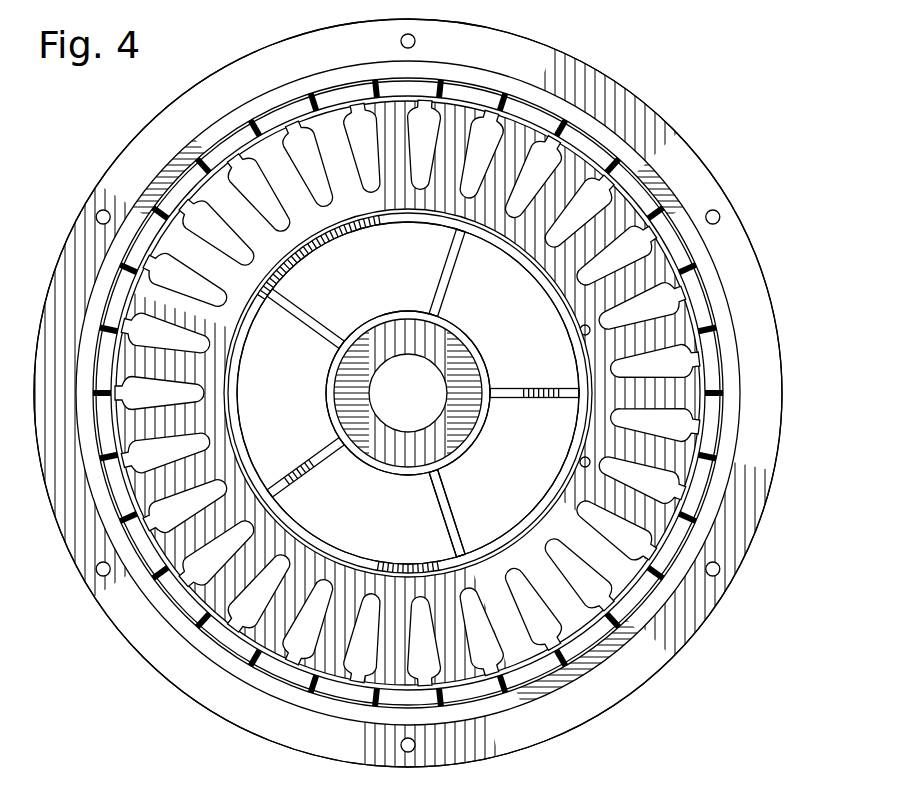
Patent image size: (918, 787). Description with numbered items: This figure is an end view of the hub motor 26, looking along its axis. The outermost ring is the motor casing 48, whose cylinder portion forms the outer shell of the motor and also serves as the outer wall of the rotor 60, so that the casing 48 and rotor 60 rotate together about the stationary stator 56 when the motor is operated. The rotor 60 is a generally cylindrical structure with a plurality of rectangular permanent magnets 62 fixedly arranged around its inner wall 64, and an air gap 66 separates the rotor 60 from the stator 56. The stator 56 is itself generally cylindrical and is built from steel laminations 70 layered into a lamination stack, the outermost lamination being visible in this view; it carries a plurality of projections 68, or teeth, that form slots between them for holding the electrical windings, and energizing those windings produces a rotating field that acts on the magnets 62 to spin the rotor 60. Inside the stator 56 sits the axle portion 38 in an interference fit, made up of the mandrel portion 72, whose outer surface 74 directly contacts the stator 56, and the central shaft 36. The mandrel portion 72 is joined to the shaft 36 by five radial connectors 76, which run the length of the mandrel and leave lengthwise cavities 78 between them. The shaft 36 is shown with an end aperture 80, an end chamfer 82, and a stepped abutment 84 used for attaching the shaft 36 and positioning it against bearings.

The hub motor 26 is at (66, 114).
The shaft 36 is at (398, 463).
The axle portion 38 is at (458, 452).
The motor casing 48 is at (531, 58).
The stator 56 is at (272, 150).
The rotor 60 is at (713, 284).
The magnets 62 is at (523, 106).
The inner wall 64 is at (726, 338).
The air gap 66 is at (643, 208).
The projections 68 is at (387, 670).
The laminations 70 is at (226, 287).
The mandrel portion 72 is at (379, 231).
The outer surface 74 is at (379, 214).
The radial connectors 76 is at (448, 262).
The lengthwise cavities 78 is at (331, 293).
The end apertures 80 is at (421, 360).
The end chamfers 82 is at (470, 381).
The stepped abutments 84 is at (407, 318).